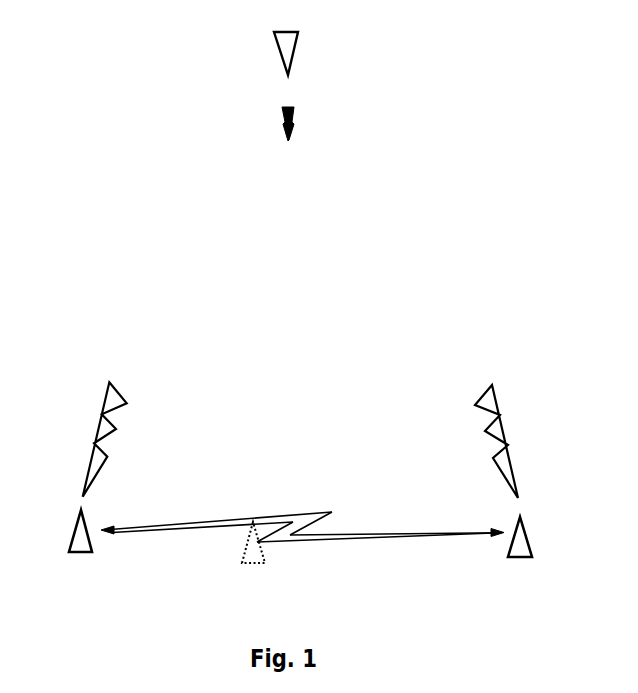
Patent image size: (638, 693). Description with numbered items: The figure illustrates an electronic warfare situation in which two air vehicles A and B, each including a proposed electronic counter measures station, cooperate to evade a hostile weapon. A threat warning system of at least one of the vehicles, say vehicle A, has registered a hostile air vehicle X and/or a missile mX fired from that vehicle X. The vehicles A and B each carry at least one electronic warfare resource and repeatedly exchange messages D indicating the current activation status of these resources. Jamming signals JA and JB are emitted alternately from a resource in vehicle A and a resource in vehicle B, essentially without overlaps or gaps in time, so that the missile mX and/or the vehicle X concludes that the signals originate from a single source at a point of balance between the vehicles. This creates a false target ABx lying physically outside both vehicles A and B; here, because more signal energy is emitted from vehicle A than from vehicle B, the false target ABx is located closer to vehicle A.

The hostile air vehicle X is at (311, 51).
The missile mX is at (326, 124).
The jamming signal JA is at (100, 438).
The jamming signal JB is at (501, 438).
The air vehicle A is at (69, 561).
The air vehicle B is at (537, 570).
The messages D is at (302, 511).
The false target ABx is at (290, 570).